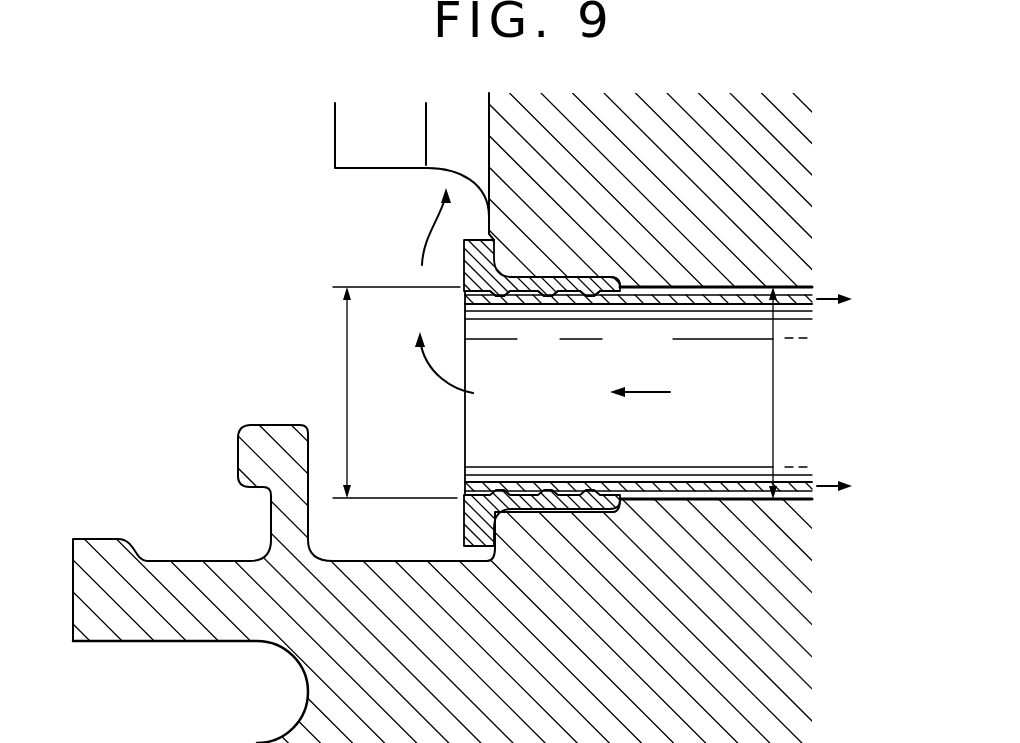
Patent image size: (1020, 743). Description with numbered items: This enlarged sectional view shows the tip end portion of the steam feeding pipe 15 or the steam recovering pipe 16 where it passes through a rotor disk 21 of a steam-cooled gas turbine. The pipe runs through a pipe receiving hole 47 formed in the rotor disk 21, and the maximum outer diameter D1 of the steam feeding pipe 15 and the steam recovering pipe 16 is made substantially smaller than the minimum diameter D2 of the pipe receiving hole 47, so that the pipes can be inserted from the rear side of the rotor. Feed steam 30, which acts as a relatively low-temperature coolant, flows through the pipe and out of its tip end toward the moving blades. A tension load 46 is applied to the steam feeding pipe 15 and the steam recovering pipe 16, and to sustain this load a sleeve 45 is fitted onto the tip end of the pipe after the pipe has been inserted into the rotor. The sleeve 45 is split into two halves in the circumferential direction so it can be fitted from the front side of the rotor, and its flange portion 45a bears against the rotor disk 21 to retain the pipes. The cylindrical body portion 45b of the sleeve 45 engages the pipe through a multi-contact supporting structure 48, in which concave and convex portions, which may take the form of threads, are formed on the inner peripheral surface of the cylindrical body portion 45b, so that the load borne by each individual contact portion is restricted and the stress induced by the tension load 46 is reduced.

The steam feeding pipe 15 is at (638, 393).
The steam recovering pipe 16 is at (654, 306).
The rotor disk 21 is at (382, 598).
The feed steam 30 is at (423, 232).
The sleeve 45 is at (538, 401).
The flange portion 45a is at (487, 265).
The cylindrical body portion 45b is at (537, 502).
The tension load 46 is at (819, 301).
The pipe receiving hole 47 is at (700, 286).
The multi-contact supporting structure 48 is at (586, 297).
The maximum outer diameter D1 is at (347, 408).
The minimum outer diameter D2 is at (773, 425).